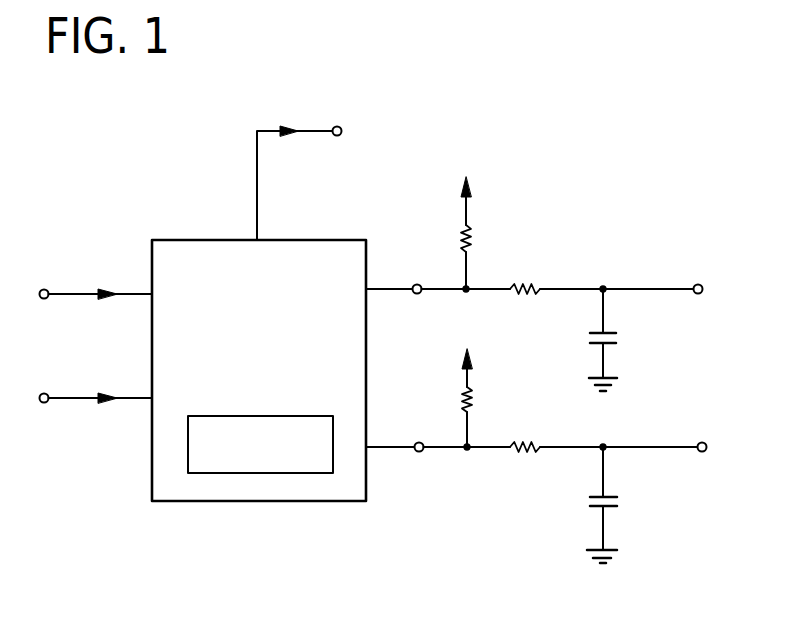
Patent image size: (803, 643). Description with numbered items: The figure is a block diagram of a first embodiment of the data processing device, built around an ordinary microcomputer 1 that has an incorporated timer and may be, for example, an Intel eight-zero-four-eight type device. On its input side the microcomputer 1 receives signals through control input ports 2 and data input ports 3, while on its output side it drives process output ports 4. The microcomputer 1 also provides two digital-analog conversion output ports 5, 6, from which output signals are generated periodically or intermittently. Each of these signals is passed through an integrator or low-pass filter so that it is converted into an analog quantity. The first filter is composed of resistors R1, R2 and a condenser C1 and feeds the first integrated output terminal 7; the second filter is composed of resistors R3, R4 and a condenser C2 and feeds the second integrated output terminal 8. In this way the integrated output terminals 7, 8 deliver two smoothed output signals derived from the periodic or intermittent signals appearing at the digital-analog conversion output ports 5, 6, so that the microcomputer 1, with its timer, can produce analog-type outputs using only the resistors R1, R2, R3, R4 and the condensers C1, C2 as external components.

The microcomputer 1 is at (263, 501).
The control input ports 2 is at (44, 289).
The data input ports 3 is at (44, 403).
The process output ports 4 is at (337, 126).
The digital-analog conversion output port 5 is at (418, 284).
The digital-analog conversion output port 6 is at (419, 452).
The integrated output terminal 7 is at (698, 284).
The integrated output terminal 8 is at (703, 452).
The resistor R1 is at (478, 240).
The resistor R2 is at (522, 295).
The resistor R3 is at (478, 403).
The resistor R4 is at (522, 453).
The condenser C1 is at (617, 338).
The condenser C2 is at (618, 498).